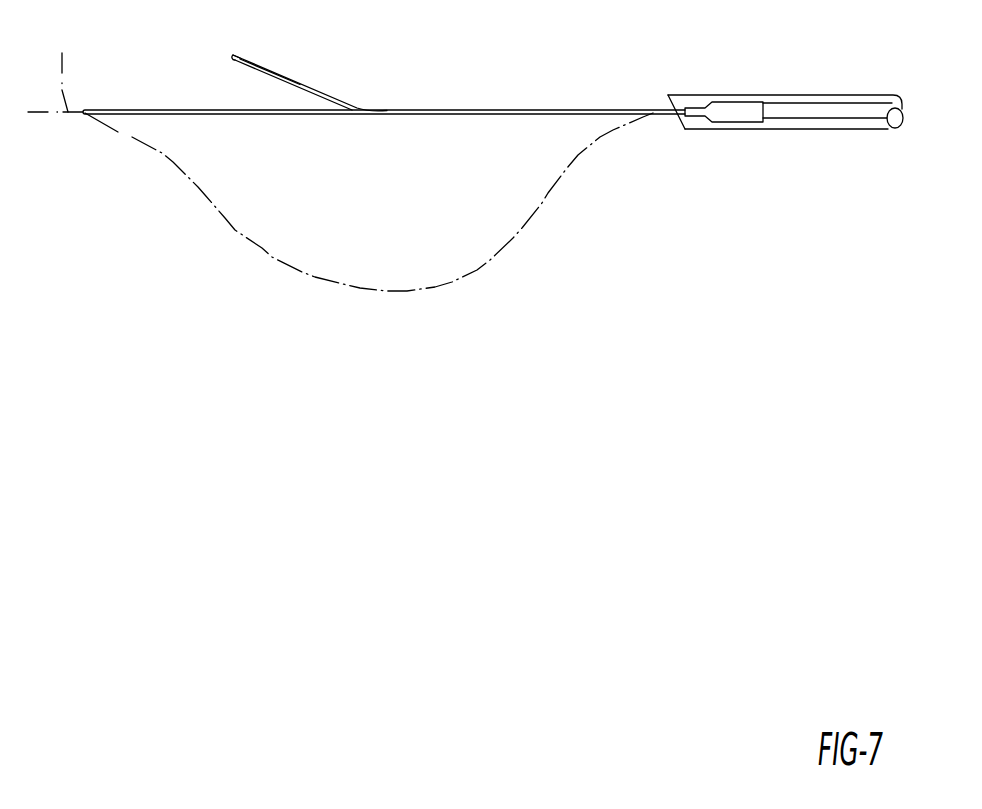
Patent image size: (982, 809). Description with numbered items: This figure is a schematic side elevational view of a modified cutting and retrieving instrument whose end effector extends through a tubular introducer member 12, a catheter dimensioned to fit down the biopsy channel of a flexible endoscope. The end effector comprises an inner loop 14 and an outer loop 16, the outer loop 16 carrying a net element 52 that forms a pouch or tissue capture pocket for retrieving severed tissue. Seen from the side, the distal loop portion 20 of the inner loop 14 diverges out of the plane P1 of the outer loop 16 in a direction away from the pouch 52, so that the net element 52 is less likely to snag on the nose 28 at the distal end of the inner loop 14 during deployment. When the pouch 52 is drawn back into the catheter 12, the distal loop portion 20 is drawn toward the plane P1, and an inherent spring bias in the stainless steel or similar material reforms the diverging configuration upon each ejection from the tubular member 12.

The plane of outer loop P1 is at (55, 66).
The outer loop 16 is at (146, 106).
The inner loop 14 is at (325, 78).
The distal loop portion of inner loop 20 is at (267, 70).
The nose 28 is at (232, 54).
The tubular introducer member 12 is at (777, 93).
The net element 52 is at (478, 268).